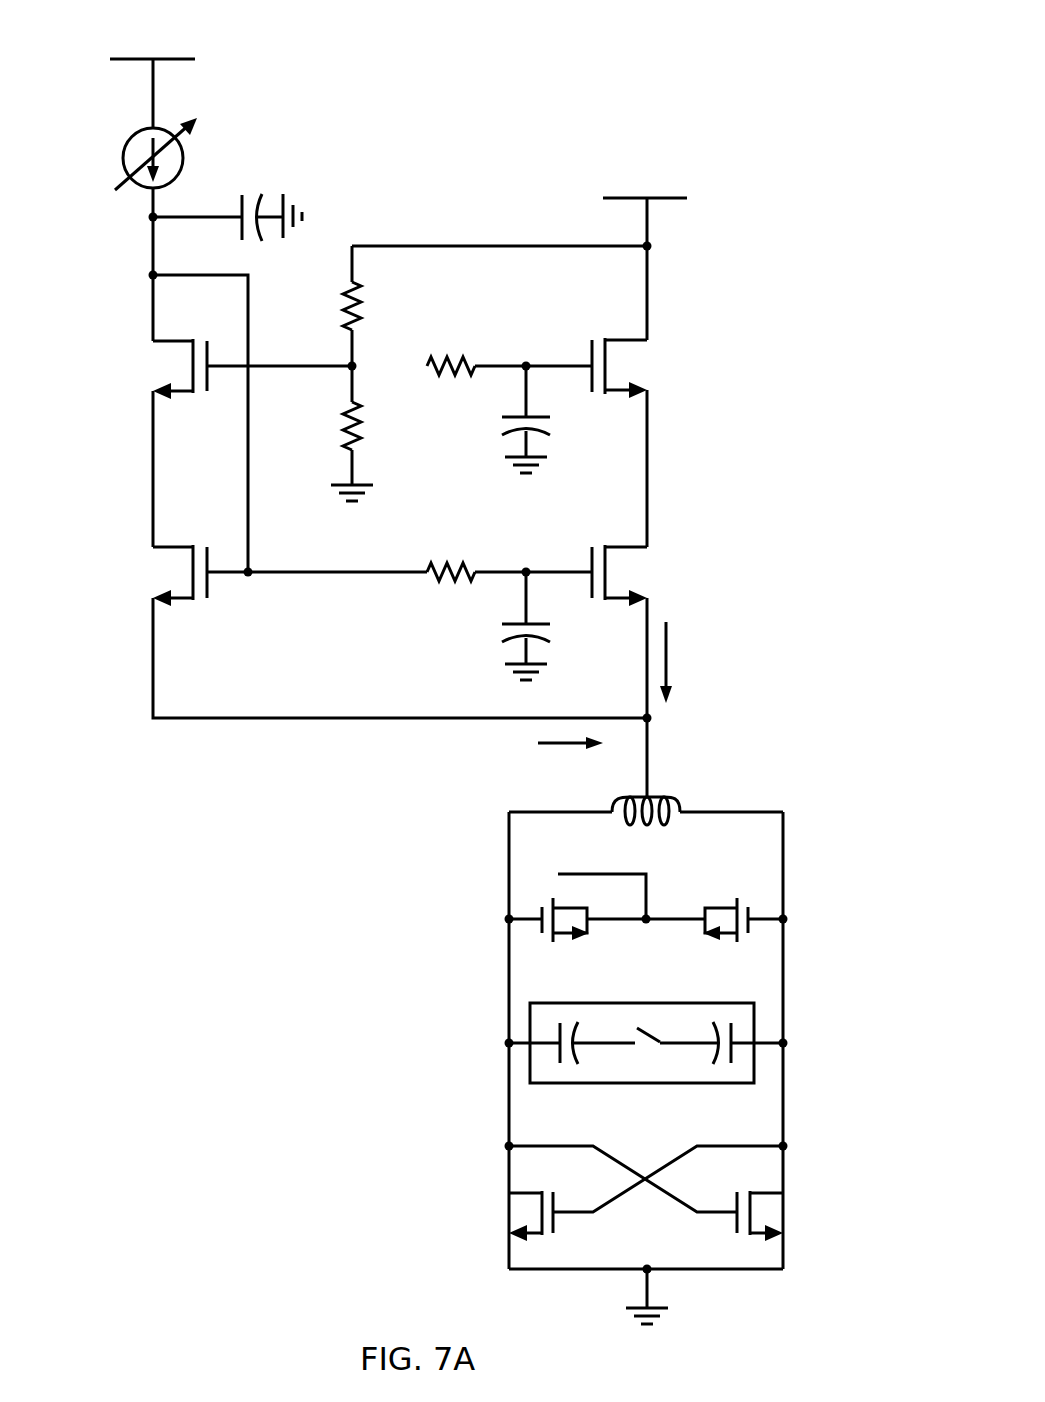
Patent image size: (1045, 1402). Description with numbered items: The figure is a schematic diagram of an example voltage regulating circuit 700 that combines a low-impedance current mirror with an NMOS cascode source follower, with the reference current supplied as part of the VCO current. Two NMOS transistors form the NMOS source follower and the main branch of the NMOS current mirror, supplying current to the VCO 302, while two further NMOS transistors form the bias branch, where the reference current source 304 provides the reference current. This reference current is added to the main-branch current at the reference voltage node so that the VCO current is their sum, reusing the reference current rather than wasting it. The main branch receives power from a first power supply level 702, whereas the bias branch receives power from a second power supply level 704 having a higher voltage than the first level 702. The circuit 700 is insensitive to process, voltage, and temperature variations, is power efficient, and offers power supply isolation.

The voltage regulating circuit 700 is at (444, 404).
The first power supply level 702 is at (663, 200).
The second power supply level 704 is at (130, 62).
The reference current source 304 is at (123, 157).
The VCO 302 is at (801, 809).